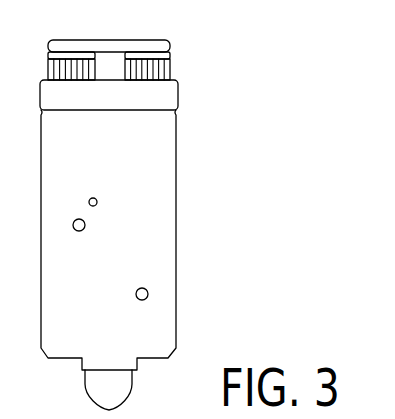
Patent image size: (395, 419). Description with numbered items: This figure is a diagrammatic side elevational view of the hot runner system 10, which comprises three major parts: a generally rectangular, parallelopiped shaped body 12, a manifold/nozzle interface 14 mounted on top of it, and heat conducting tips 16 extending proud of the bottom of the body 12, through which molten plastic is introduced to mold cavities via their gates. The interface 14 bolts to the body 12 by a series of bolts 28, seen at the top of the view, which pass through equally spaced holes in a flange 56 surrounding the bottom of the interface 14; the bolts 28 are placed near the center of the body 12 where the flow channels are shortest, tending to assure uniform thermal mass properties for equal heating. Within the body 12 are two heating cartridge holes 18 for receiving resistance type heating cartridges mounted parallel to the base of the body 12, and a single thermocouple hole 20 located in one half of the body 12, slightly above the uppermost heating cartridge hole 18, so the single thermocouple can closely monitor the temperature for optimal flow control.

The hot runner system 10 is at (162, 14).
The body 12 is at (185, 141).
The manifold/nozzle interface 14 is at (170, 30).
The heat conducting tip 16 is at (140, 396).
The heating cartridge holes 18 is at (77, 231).
The thermocouple hole 20 is at (96, 198).
The bolts 28 is at (72, 55).
The flange 56 is at (152, 94).